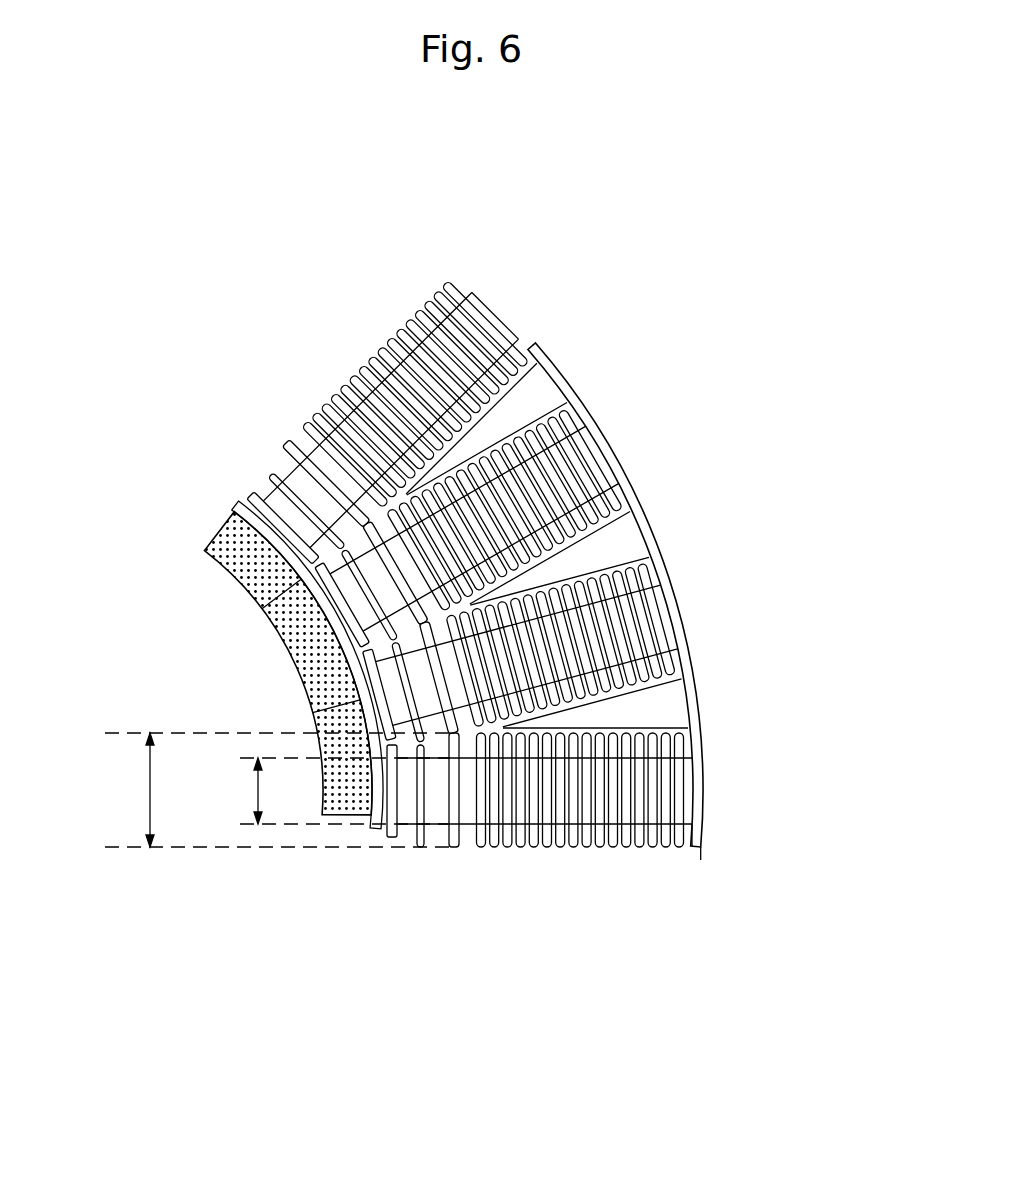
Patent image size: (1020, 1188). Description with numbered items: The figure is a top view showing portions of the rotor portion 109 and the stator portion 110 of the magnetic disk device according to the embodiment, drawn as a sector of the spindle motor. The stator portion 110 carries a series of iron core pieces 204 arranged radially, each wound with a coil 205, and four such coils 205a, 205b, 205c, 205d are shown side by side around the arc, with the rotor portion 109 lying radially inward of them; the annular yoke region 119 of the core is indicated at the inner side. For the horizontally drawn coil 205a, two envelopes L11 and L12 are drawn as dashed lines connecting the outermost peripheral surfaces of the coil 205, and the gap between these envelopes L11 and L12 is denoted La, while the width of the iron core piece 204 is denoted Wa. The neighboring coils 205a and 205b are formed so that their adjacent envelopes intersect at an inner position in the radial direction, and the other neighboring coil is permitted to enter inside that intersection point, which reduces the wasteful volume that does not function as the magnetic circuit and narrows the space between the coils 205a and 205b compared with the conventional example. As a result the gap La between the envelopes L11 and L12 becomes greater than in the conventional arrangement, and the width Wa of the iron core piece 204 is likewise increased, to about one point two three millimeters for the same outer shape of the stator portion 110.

The stator core yoke 119 is at (278, 646).
The rotor portion 109 is at (325, 900).
The stator portion 110 is at (592, 905).
The iron core piece 204 is at (437, 805).
The coil 205 is at (545, 855).
The coil 205a is at (632, 874).
The coil 205b is at (706, 600).
The coil 205c is at (631, 438).
The coil 205d is at (492, 312).
The envelope L11 is at (122, 848).
The envelope L12 is at (122, 733).
The gap between envelopes La is at (124, 790).
The width of iron core piece Wa is at (325, 791).